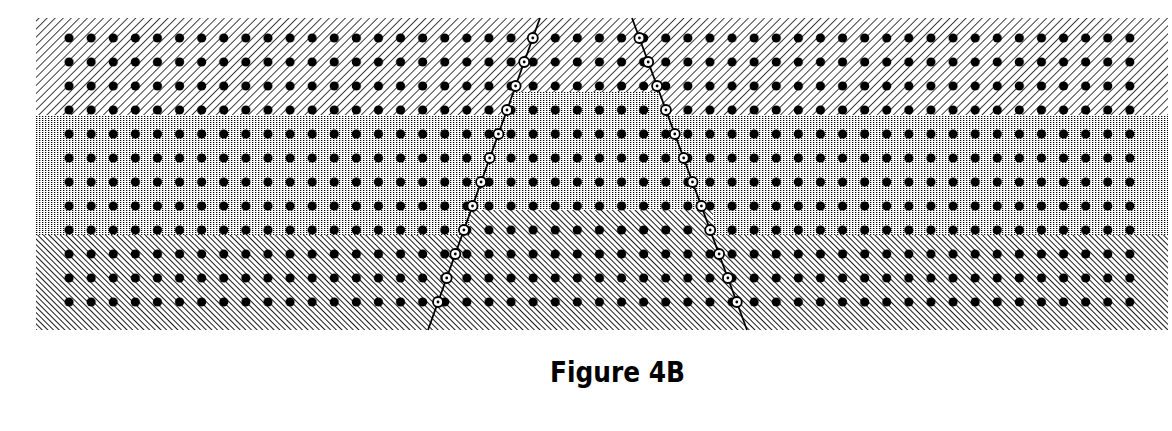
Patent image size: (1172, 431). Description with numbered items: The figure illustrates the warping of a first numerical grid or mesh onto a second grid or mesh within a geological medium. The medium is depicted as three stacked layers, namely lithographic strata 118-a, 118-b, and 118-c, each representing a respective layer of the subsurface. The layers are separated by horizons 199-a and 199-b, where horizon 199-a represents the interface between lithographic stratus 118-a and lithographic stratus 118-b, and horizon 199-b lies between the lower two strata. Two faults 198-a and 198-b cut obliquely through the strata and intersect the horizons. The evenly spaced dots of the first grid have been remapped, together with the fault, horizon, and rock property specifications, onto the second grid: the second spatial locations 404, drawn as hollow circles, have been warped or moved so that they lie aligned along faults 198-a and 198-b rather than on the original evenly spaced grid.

The lithographic stratus 118-a is at (1062, 86).
The lithographic stratus 118-b is at (1062, 206).
The lithographic stratus 118-c is at (1062, 303).
The second spatial locations 404 is at (527, 33).
The fault 198-a is at (484, 141).
The fault 198-b is at (667, 122).
The horizon 199-a is at (865, 112).
The horizon 199-b is at (868, 233).